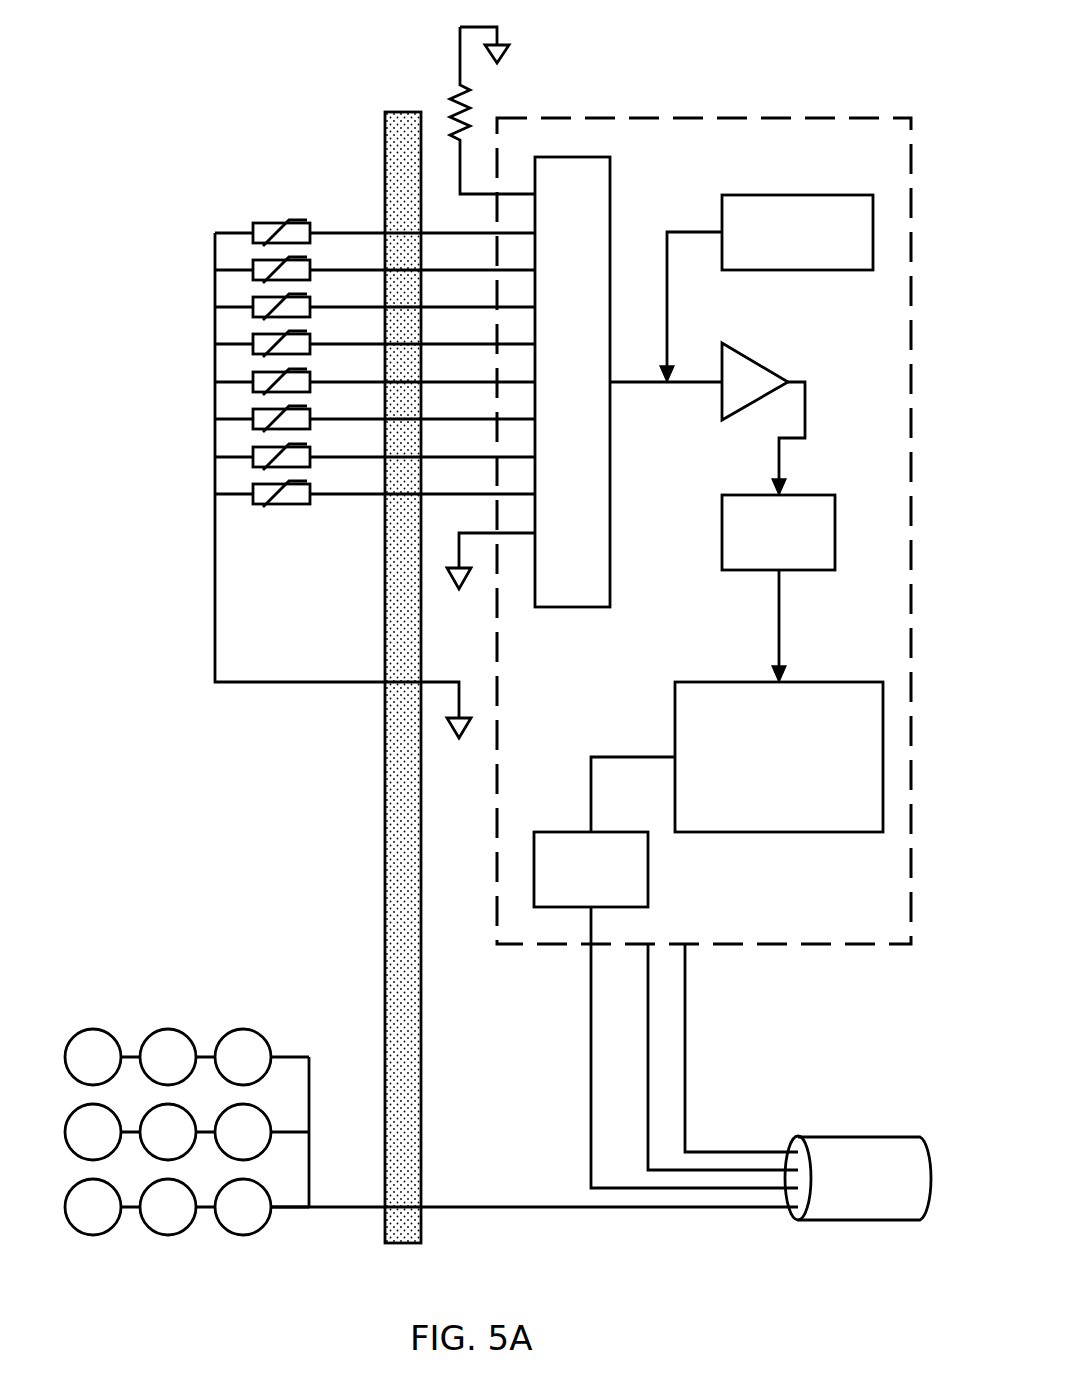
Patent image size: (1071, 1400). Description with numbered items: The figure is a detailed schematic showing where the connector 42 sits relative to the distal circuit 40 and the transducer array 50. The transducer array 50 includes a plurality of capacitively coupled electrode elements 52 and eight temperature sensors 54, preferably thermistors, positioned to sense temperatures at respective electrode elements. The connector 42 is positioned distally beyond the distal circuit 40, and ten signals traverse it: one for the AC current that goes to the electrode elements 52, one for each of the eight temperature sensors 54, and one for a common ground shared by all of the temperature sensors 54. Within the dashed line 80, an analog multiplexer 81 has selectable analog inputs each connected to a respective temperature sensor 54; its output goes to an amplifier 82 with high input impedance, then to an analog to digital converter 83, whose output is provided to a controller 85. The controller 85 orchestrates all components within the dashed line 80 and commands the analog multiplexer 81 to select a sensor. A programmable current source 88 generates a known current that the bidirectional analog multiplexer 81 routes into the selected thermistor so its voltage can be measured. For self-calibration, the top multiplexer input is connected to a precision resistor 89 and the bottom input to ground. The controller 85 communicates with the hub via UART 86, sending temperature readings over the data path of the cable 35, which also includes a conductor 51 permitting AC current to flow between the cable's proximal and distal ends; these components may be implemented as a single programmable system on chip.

The cable 35 is at (832, 1137).
The distal circuit 40 is at (735, 52).
The connector 42 is at (403, 110).
The transducer array 50 is at (156, 45).
The conductor 51 is at (473, 1207).
The electrode elements 52 is at (117, 1032).
The temperature sensors 54 is at (263, 223).
The dashed line 80 is at (788, 118).
The analog multiplexer 81 is at (607, 582).
The amplifier 82 is at (755, 358).
The analog to digital converter 83 is at (735, 493).
The controller 85 is at (675, 727).
The UART 86 is at (648, 873).
The current source 88 is at (795, 195).
The precision resistor 89 is at (470, 107).